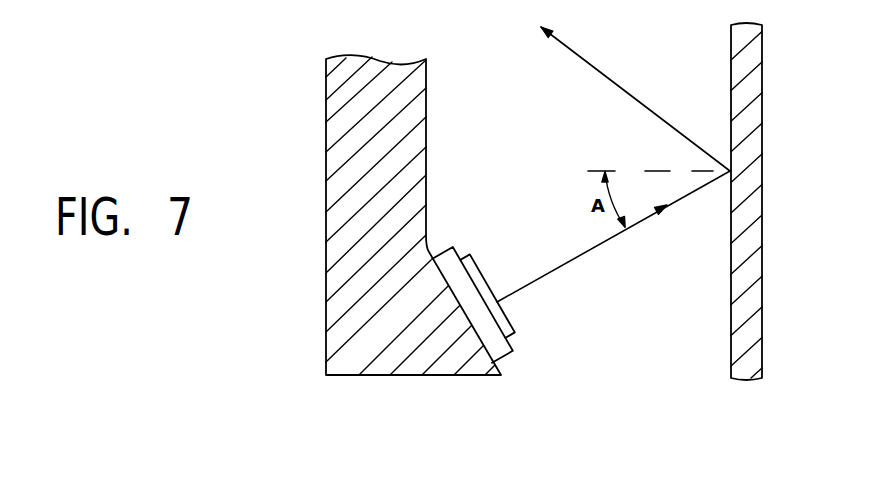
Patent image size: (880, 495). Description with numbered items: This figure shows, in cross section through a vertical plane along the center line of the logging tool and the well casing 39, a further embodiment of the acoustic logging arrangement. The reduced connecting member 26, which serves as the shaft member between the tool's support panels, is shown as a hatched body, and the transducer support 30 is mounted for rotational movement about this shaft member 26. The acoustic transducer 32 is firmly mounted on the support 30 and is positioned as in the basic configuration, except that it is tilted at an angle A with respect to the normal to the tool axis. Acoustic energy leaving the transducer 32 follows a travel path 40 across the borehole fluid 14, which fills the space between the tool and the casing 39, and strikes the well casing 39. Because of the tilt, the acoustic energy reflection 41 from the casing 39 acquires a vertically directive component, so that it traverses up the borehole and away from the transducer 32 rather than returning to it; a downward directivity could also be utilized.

The borehole fluid 14 is at (476, 116).
The connecting member 26 is at (326, 133).
The transducer support 30 is at (505, 357).
The acoustic transducer 32 is at (515, 328).
The wall / plate 39 is at (762, 148).
The incident light ray 40 is at (583, 256).
The acoustic energy reflection 41 is at (648, 107).